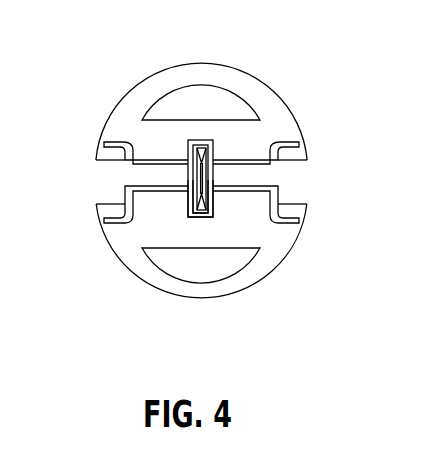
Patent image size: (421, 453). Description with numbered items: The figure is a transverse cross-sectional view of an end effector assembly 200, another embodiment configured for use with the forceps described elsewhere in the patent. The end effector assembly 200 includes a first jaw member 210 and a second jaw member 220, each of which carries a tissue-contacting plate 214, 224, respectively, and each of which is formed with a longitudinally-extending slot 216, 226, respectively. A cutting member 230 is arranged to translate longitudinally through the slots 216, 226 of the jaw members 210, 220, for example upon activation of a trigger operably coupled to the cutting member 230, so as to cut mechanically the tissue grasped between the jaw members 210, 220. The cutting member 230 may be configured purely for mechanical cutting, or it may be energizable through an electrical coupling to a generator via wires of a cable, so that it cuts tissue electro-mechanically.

The end effector assembly 200 is at (268, 51).
The first jaw member 210 is at (127, 69).
The tissue-contacting plate 214 is at (270, 173).
The longitudinally-extending slot 216 is at (196, 141).
The second jaw member 220 is at (124, 284).
The tissue-contacting plate 224 is at (272, 183).
The longitudinally-extending slot 226 is at (200, 215).
The cutting member 230 is at (188, 179).